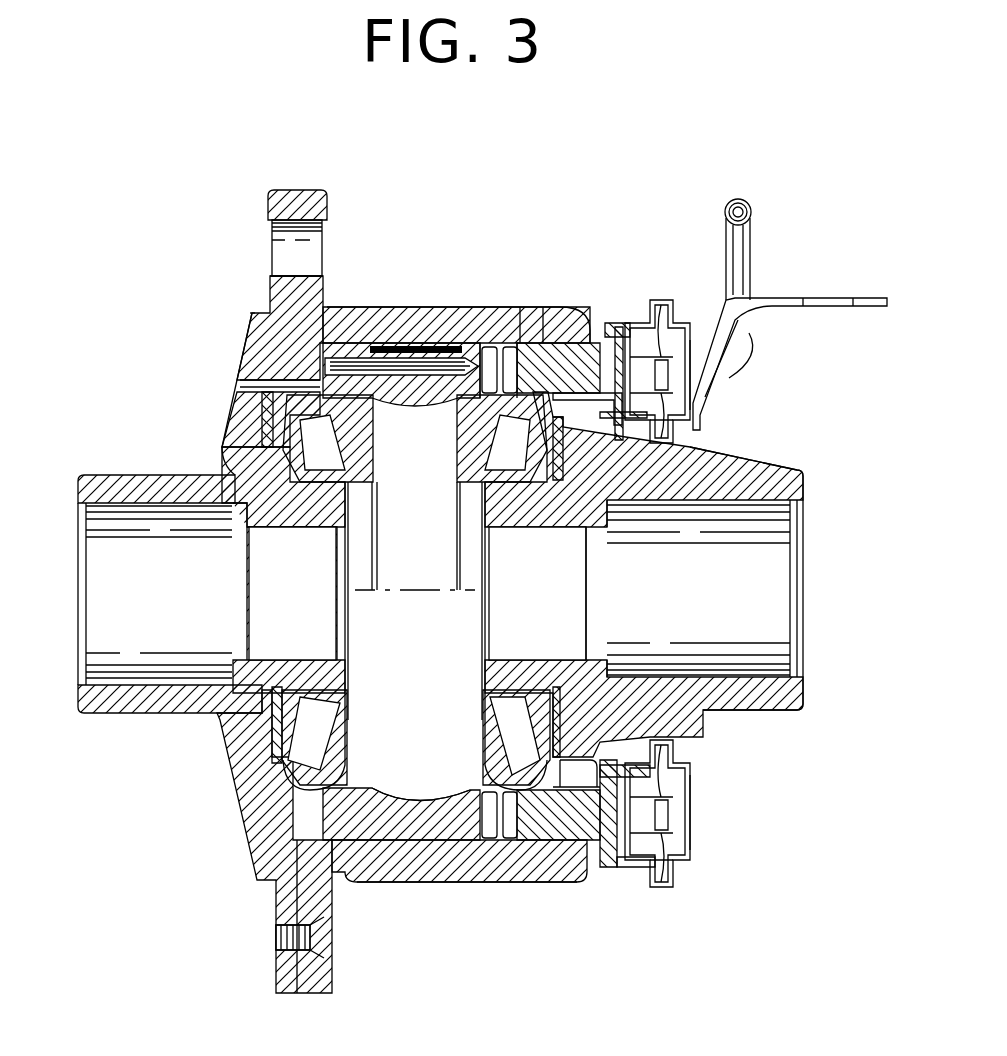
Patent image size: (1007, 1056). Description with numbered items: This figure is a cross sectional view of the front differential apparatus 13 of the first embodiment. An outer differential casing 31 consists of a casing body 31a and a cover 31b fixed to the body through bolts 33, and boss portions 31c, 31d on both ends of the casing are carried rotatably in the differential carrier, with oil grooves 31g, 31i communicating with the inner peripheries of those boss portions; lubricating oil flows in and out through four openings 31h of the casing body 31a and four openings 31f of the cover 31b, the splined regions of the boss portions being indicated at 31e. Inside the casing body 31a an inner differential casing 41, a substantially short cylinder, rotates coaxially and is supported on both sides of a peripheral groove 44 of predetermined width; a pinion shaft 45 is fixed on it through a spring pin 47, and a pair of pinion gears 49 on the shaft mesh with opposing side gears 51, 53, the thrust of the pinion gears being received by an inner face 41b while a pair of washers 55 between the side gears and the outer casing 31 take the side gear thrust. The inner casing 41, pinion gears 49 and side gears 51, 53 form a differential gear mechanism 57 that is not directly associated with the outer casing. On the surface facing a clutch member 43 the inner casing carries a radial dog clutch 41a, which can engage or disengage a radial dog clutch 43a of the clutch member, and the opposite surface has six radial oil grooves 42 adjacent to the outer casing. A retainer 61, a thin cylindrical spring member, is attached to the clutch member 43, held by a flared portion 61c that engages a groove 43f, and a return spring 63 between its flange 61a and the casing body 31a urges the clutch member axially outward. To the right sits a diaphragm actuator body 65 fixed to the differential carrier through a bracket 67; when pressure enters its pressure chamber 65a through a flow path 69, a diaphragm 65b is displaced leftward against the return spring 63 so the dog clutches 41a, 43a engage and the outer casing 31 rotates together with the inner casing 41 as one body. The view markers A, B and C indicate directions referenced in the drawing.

The front differential apparatus 13 is at (597, 187).
The outer differential casing 31 is at (290, 191).
The casing body 31a is at (364, 305).
The cover 31b is at (252, 313).
The boss portion 31c is at (770, 466).
The boss portion 31d is at (118, 476).
The spline 31e is at (650, 503).
The openings 31f is at (247, 387).
The oil groove 31g is at (220, 450).
The openings 31h is at (575, 320).
The oil groove 31i is at (583, 520).
The bolts 33 is at (332, 947).
The inner differential casing 41 is at (377, 810).
The radial dog clutch 41a is at (490, 345).
The inner face 41b is at (433, 800).
The oil grooves 42 is at (317, 362).
The clutch member 43 is at (570, 877).
The radial dog clutch 43a is at (527, 345).
The groove 43f is at (503, 737).
The peripheral groove 44 is at (393, 843).
The pinion shaft 45 is at (436, 541).
The spring pin 47 is at (402, 358).
The pinion gears 49 is at (335, 430).
The side gear 51 is at (260, 517).
The side gear 53 is at (548, 505).
The washers 55 is at (270, 712).
The differential gear mechanism 57 is at (437, 893).
The retainer 61 is at (618, 335).
The flange 61a is at (612, 322).
The flared portion 61c is at (553, 840).
The return spring 63 is at (602, 330).
The diaphragm actuator body 65 is at (697, 255).
The pressure chamber 65a is at (690, 405).
The diaphragm 65b is at (700, 430).
The bracket 67 is at (867, 298).
The flow path 69 is at (752, 256).
The direction A is at (496, 333).
The direction B is at (490, 858).
The direction C is at (885, 528).